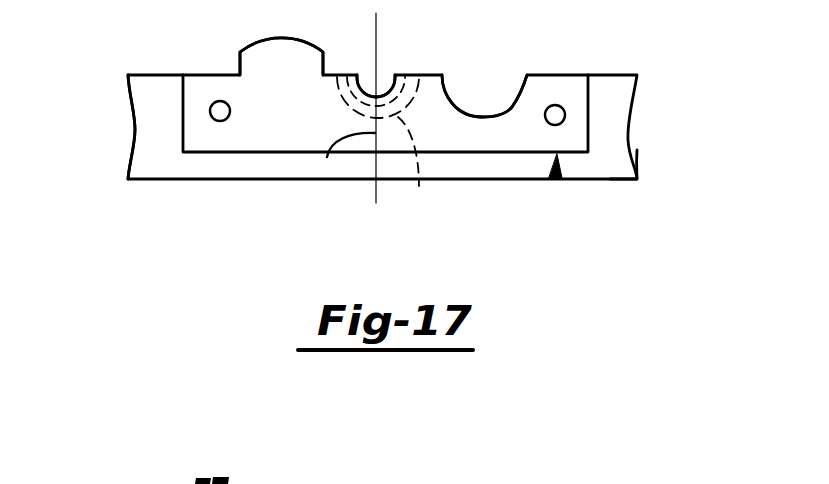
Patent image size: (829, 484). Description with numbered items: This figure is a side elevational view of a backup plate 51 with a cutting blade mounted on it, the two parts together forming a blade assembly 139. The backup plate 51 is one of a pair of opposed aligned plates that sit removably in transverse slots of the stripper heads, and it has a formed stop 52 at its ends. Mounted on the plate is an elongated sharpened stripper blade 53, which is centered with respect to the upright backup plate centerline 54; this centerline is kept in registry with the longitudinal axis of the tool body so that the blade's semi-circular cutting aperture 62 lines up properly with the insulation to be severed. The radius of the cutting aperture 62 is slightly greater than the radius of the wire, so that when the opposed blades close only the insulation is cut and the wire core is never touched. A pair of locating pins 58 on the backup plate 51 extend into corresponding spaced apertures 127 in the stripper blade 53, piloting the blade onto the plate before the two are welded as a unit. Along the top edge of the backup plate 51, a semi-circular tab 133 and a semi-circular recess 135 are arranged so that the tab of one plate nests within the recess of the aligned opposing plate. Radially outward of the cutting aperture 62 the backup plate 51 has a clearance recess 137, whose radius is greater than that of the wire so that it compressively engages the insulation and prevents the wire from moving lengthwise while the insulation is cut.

The backup plate 51 is at (242, 167).
The formed stop 52 is at (130, 128).
The stripper blade 53 is at (559, 182).
The backup plate centerline 54 is at (327, 157).
The locating pin 58 is at (218, 114).
The semi-circular cutting aperture 62 is at (358, 93).
The spaced aperture 127 is at (560, 122).
The semi-circular tab 133 is at (246, 50).
The semi-circular recess 135 is at (512, 107).
The clearance recess 137 is at (421, 193).
The blade assembly 139 is at (639, 181).